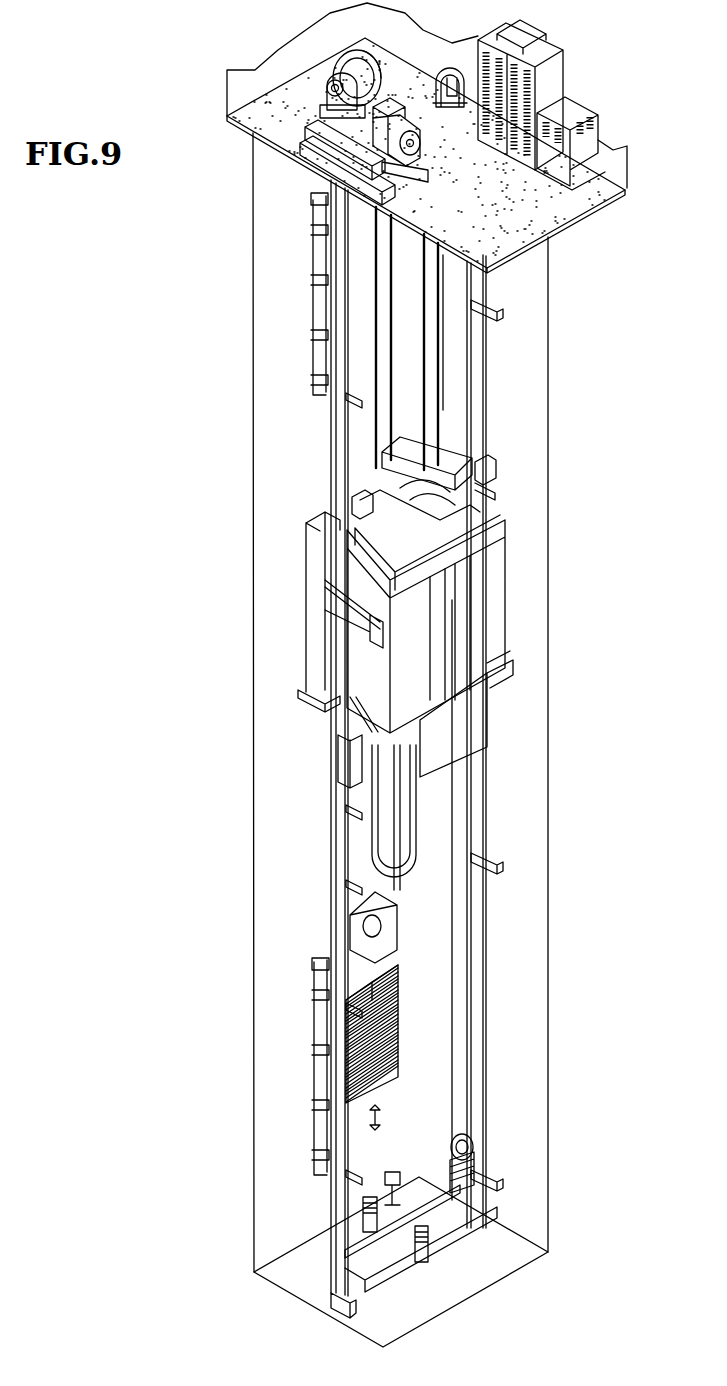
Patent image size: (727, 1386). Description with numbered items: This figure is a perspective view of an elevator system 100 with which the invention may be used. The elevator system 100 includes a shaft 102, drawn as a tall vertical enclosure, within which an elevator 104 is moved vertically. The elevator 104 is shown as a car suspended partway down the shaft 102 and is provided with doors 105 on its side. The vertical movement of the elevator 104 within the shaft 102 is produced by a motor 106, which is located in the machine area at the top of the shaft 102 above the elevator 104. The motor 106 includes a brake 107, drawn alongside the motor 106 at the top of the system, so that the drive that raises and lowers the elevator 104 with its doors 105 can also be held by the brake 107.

The elevator system 100 is at (128, 345).
The shaft 102 is at (252, 292).
The elevator 104 is at (305, 605).
The doors 105 is at (470, 637).
The motor 106 is at (412, 133).
The brake 107 is at (332, 88).